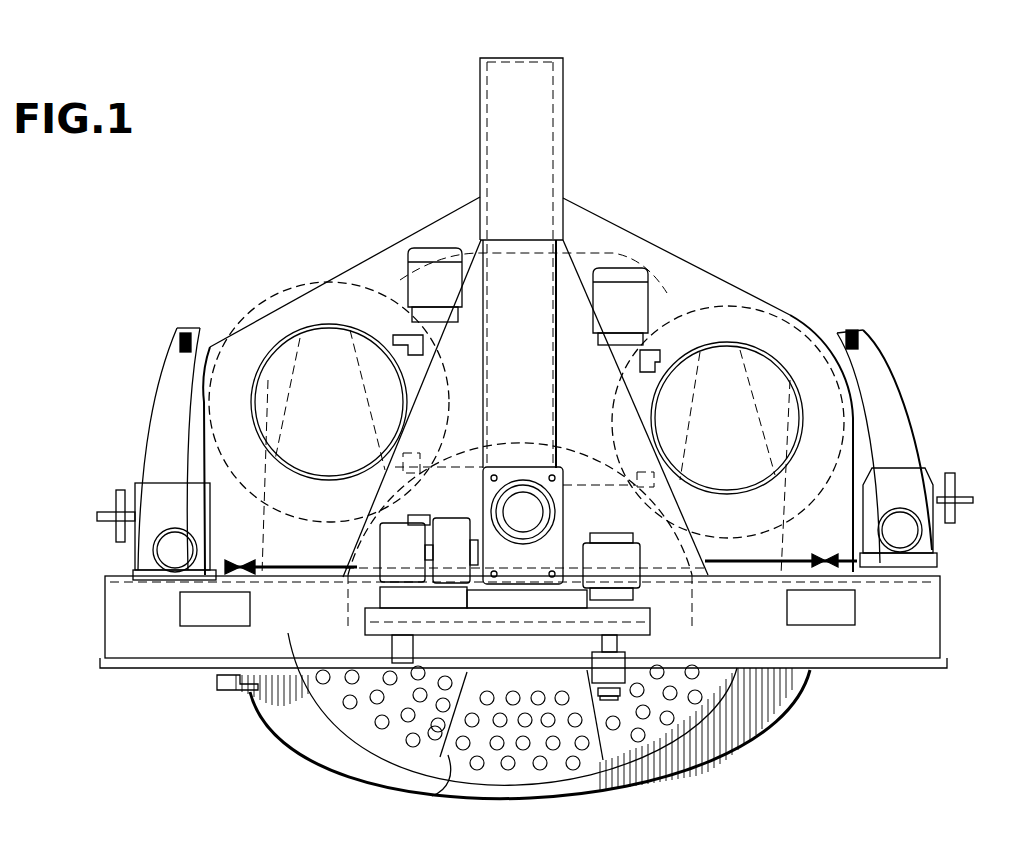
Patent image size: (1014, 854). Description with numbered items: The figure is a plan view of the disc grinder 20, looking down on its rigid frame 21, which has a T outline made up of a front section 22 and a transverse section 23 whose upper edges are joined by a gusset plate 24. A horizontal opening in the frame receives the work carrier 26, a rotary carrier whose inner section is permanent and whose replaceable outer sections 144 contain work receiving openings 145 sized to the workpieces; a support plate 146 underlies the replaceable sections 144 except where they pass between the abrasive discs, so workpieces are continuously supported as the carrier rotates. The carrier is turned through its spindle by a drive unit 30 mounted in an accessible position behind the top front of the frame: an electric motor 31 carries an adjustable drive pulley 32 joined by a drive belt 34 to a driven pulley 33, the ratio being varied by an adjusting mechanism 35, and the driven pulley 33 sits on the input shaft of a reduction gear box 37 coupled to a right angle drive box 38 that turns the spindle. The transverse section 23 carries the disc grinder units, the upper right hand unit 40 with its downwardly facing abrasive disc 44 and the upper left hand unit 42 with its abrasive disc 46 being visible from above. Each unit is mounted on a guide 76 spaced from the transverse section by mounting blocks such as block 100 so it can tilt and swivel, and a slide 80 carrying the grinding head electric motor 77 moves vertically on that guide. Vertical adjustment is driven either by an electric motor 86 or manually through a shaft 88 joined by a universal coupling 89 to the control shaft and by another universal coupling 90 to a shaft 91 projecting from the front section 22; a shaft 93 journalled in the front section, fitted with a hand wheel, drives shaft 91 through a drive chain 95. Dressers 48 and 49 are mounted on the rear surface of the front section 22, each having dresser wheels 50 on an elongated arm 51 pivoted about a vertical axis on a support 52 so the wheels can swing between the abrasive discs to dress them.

The disc grinder 20 is at (660, 207).
The rigid frame 21 is at (566, 135).
The front section 22 is at (945, 610).
The transverse section 23 is at (478, 192).
The gusset plate 24 is at (357, 553).
The work carrier 26 is at (650, 725).
The drive unit 30 is at (578, 528).
The electric motor 31 is at (640, 560).
The drive pulley 32 is at (640, 640).
The driven pulley 33 is at (380, 638).
The drive belt 34 is at (470, 638).
The adjusting mechanism 35 is at (592, 660).
The reduction gear box 37 is at (392, 530).
The right angle drive box 38 is at (557, 503).
The disc grinder unit 40 is at (528, 433).
The disc grinder unit 42 is at (300, 338).
The abrasive disc 44 is at (765, 305).
The abrasive disc 46 is at (248, 305).
The dresser 48 is at (905, 413).
The dresser 49 is at (160, 440).
The dresser wheels 50 is at (188, 330).
The elongated arm 51 is at (163, 385).
The support 52 is at (152, 552).
The guide 76 is at (405, 386).
The electric motor 77 is at (322, 467).
The slide 80 is at (389, 342).
The electric motor 86 is at (440, 250).
The shaft 88 is at (523, 515).
The universal coupling 89 is at (442, 466).
The universal coupling 90 is at (440, 518).
The shaft 91 is at (360, 540).
The shaft 93 is at (241, 558).
The drive chain 95 is at (288, 565).
The mounting block 100 is at (526, 472).
The replaceable outer sections 144 is at (395, 735).
The work receiving openings 145 is at (377, 722).
The support plate 146 is at (752, 722).